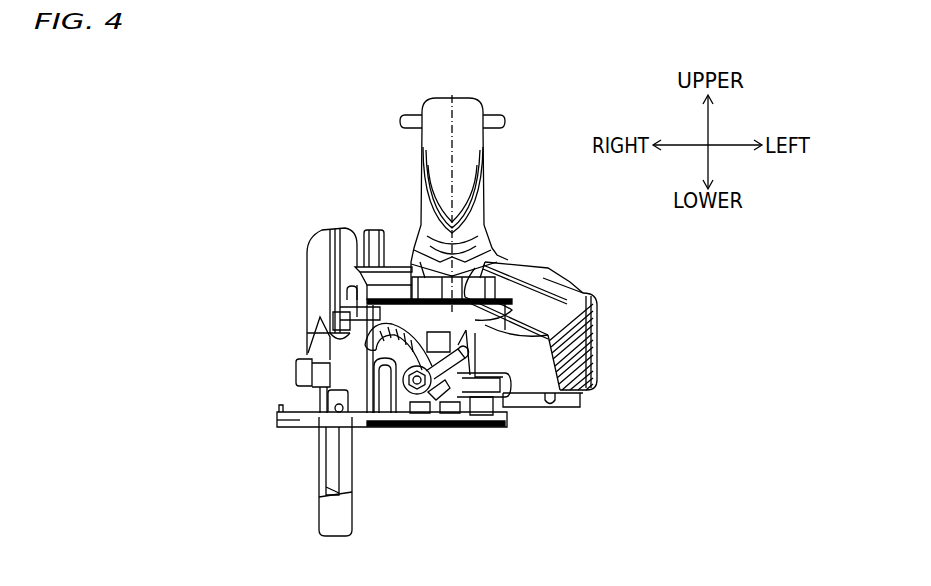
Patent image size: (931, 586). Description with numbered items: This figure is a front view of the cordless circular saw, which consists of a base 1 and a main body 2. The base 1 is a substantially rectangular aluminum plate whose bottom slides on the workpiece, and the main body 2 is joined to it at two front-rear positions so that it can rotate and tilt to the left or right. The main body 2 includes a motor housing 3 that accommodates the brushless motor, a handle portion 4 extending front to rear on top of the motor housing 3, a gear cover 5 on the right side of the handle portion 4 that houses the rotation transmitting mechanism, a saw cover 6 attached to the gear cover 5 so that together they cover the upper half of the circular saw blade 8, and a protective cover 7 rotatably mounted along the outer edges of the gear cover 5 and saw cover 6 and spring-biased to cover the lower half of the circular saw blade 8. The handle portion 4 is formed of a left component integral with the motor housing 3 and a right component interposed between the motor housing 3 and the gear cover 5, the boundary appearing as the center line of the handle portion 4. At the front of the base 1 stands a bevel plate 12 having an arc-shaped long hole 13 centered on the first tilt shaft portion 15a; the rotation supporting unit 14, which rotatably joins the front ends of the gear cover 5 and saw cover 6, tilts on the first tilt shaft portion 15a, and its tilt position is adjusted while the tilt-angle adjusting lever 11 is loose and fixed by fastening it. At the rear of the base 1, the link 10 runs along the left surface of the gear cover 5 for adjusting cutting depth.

The base 1 is at (271, 432).
The main body 2 is at (533, 262).
The motor housing 3 is at (567, 309).
The handle portion 4 is at (464, 142).
The gear cover 5 is at (398, 282).
The saw cover 6 is at (322, 243).
The protective cover 7 is at (342, 520).
The circular saw blade 8 is at (333, 457).
The link 10 is at (375, 222).
The tilt-angle adjusting lever 11 is at (468, 395).
The bevel plate 12 is at (370, 392).
The long hole 13 is at (400, 348).
The rotation supporting unit 14 is at (332, 348).
The first tilt shaft portion 15a is at (318, 407).